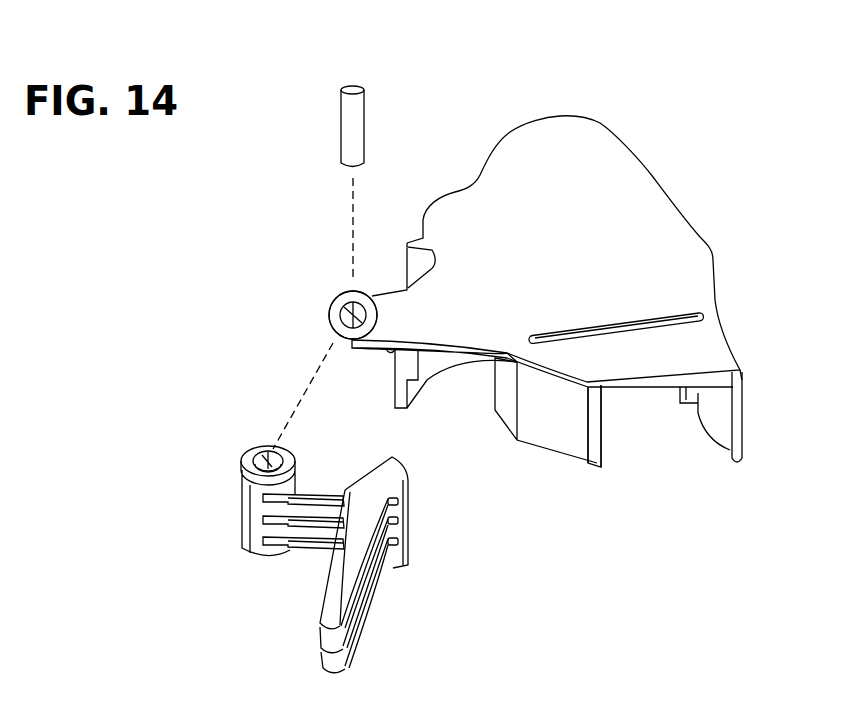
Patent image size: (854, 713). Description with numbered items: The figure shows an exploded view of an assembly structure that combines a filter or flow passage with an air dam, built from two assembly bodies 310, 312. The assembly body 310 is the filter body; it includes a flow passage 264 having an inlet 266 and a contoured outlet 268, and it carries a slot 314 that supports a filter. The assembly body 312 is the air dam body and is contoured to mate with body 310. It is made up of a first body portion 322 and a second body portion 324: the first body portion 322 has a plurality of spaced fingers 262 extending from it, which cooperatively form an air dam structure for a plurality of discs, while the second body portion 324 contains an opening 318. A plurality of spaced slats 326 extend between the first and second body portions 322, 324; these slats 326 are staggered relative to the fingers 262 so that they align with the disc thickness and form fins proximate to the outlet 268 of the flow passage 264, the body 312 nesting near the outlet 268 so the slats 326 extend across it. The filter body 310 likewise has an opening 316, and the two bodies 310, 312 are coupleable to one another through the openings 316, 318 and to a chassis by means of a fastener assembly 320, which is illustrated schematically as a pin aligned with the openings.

The assembly body 310 is at (558, 118).
The assembly body 312 is at (359, 509).
The slot 314 is at (610, 323).
The opening 316 is at (377, 299).
The opening 318 is at (223, 457).
The fastener assembly 320 is at (368, 86).
The first body portion 322 is at (392, 458).
The second body portion 324 is at (242, 453).
The slats 326 is at (310, 477).
The fingers 262 is at (410, 518).
The flow passage 264 is at (655, 413).
The inlet 266 is at (713, 420).
The contoured outlet 268 is at (468, 395).